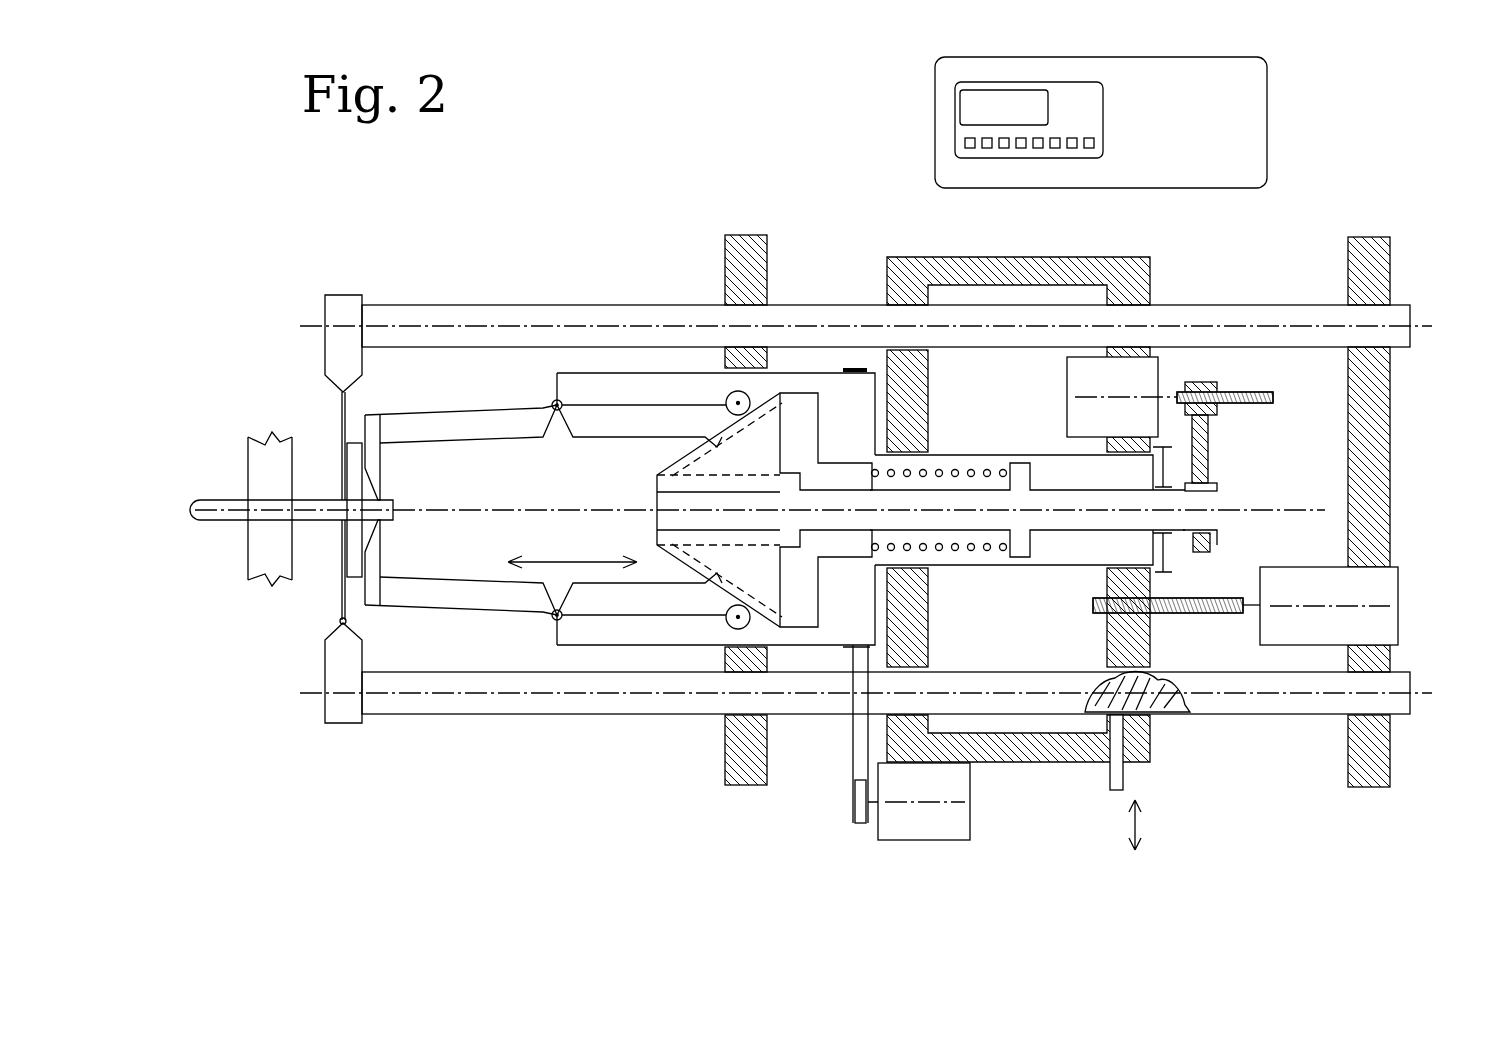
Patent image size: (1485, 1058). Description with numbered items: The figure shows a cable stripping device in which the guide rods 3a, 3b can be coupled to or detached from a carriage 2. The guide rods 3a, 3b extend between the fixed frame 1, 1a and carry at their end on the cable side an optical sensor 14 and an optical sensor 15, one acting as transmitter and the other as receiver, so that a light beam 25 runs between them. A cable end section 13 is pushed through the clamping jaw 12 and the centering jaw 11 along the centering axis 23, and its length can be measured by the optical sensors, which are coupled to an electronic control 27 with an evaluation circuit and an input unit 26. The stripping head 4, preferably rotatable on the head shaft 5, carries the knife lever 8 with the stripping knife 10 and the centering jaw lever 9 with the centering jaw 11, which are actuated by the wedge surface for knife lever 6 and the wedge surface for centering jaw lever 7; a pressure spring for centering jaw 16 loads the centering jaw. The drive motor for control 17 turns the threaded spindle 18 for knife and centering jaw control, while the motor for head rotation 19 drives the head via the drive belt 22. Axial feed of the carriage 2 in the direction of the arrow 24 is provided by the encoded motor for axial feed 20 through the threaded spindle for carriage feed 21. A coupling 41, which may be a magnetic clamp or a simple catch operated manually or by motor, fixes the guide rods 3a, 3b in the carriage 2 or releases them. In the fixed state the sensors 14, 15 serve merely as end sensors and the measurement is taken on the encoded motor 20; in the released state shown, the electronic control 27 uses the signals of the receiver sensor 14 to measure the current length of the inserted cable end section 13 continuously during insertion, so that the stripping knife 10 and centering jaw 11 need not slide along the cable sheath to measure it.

The fixed frame 1 is at (732, 798).
The fixed frame 1a is at (1337, 787).
The carriage 2 is at (1048, 765).
The guide rod 3a is at (1273, 702).
The guide rod 3b is at (1267, 317).
The stripping head 4 is at (655, 665).
The head shaft 5 is at (966, 436).
The wedge surface for knife lever 6 is at (768, 420).
The wedge surface for centering jaw lever 7 is at (802, 413).
The knife lever 8 is at (513, 613).
The centering jaw lever 9 is at (435, 583).
The stripping knife 10 is at (385, 562).
The centering jaw 11 is at (342, 432).
The clamping jaw 12 is at (260, 563).
The cable end section 13 is at (213, 498).
The optical sensor 14 is at (323, 675).
The optical sensor 15 is at (322, 360).
The pressure spring for centering jaw 16 is at (957, 548).
The drive motor for control 17 is at (1140, 375).
The threaded spindle for knife-centering jaw control 18 is at (1268, 407).
The motor for head rotation 19 is at (943, 832).
The motor for axial feed 20 is at (1403, 590).
The threaded spindle for carriage feed 21 is at (1095, 612).
The drive belt 22 is at (850, 757).
The centering axis or axis of rotation 23 is at (528, 498).
The arrow 24 is at (572, 545).
The light beam 25 is at (333, 607).
The input unit 26 is at (950, 152).
The electronic control 27 is at (1242, 155).
The coupling 41 is at (1125, 783).